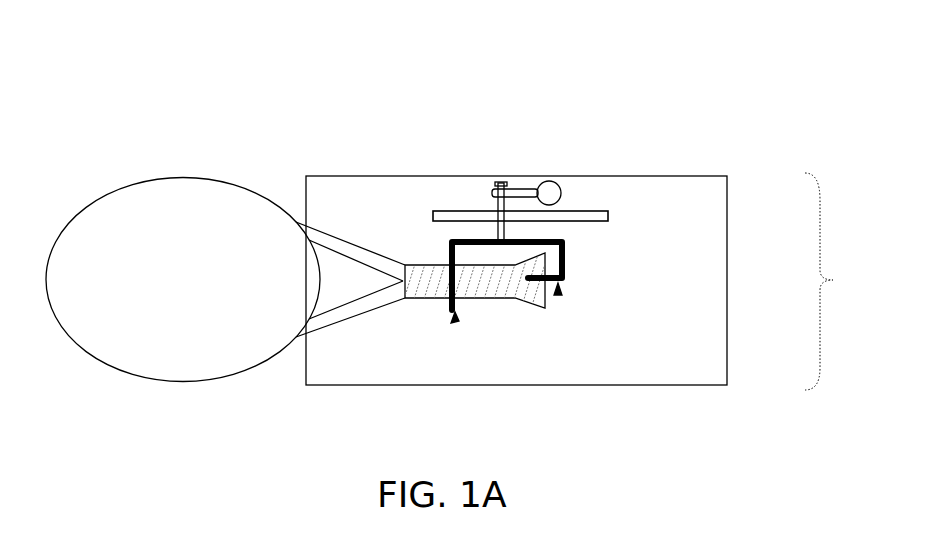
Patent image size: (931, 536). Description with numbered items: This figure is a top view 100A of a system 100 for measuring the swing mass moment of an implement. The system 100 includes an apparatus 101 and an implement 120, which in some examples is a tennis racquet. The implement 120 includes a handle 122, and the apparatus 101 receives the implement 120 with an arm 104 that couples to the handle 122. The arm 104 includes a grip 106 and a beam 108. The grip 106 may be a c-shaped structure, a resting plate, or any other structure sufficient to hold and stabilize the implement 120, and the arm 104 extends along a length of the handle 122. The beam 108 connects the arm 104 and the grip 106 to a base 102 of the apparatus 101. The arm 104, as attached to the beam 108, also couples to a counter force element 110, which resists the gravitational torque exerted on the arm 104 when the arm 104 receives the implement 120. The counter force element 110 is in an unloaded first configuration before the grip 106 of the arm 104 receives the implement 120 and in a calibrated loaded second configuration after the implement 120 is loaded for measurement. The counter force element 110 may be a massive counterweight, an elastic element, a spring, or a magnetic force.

The system 100 is at (186, 52).
The top view 100A is at (464, 233).
The apparatus 101 is at (843, 281).
The base 102 is at (687, 336).
The arm 104 is at (447, 241).
The grip 106 is at (558, 296).
The beam 108 is at (508, 228).
The counter force element 110 is at (549, 193).
The implement 120 is at (207, 286).
The handle 122 is at (418, 300).